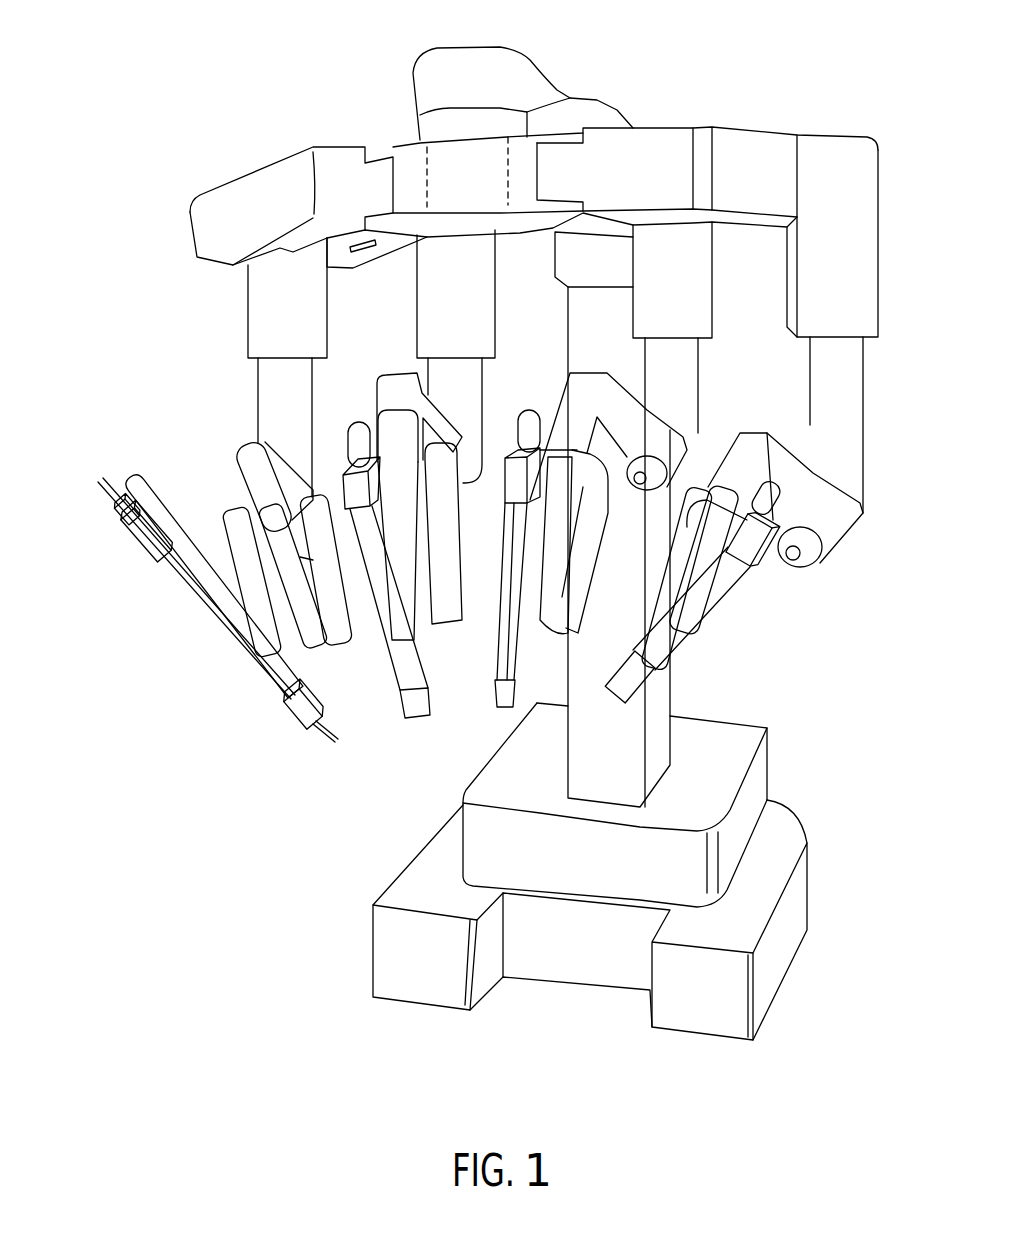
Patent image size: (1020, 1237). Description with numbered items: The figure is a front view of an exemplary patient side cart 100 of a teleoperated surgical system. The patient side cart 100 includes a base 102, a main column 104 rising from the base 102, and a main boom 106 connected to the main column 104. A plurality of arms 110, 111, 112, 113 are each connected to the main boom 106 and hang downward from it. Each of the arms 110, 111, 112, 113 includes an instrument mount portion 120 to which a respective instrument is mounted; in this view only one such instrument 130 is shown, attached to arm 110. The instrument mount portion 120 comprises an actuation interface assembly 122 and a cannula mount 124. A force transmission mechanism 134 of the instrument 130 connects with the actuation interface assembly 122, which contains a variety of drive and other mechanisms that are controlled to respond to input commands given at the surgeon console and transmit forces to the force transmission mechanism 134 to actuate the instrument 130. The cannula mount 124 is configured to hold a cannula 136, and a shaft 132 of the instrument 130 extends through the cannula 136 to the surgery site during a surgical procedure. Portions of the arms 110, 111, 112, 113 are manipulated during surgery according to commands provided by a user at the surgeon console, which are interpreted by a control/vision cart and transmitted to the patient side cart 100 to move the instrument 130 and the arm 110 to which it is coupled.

The patient side cart 100 is at (150, 80).
The base 102 is at (753, 730).
The main column 104 is at (572, 767).
The main boom 106 is at (583, 103).
The arm 110 is at (213, 428).
The arm 111 is at (372, 367).
The arm 112 is at (550, 397).
The arm 113 is at (752, 413).
The instrument mount portion 120 is at (205, 562).
The actuation interface assembly 122 is at (148, 547).
The cannula mount 124 is at (292, 722).
The instrument 130 is at (207, 630).
The shaft 132 is at (190, 576).
The force transmission mechanism 134 is at (118, 509).
The cannula 136 is at (325, 743).